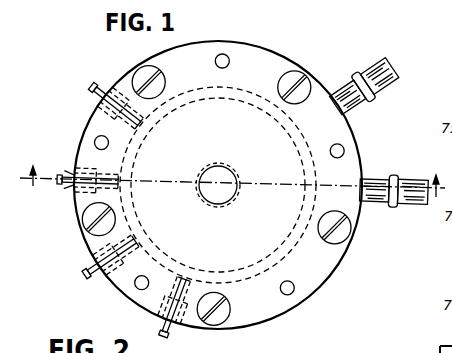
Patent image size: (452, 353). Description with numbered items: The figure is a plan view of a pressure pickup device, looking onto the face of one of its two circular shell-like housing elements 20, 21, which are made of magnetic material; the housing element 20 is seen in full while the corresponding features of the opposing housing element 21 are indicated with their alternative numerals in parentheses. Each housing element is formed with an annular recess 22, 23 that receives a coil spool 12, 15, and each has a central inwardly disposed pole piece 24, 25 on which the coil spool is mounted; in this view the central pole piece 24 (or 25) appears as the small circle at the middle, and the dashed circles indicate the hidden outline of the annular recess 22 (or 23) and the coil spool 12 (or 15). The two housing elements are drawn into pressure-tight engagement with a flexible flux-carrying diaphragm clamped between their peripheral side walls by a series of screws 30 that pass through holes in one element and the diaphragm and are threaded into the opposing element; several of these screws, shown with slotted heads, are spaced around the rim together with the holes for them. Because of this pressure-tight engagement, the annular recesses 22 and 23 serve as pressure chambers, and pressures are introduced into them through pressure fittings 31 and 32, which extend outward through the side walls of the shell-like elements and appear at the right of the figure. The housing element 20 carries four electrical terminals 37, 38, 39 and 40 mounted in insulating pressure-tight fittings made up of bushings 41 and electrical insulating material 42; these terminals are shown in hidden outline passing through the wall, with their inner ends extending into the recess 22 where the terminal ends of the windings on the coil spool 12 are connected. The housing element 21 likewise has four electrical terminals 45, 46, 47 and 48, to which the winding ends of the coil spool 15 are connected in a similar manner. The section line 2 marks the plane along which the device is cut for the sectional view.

The section line 2- 2 is at (232, 195).
The coil spool 12 is at (230, 185).
The coil spool 15 is at (320, 289).
The shell-like housing element 20 is at (268, 185).
The shell-like housing element 21 is at (343, 257).
The annular recess 22 is at (273, 185).
The annular recess 23 is at (320, 170).
The pole piece 24 is at (234, 174).
The pole piece 25 is at (216, 164).
The screw 30 is at (215, 62).
The pressure fitting 31 is at (372, 204).
The pressure fitting 32 is at (375, 67).
The electrical terminal 37 is at (93, 104).
The electrical terminal 38 is at (70, 160).
The electrical terminal 39 is at (88, 273).
The electrical terminal 40 is at (188, 313).
The bushing 41 is at (98, 250).
The electrical insulating material 42 is at (92, 268).
The electrical terminal 45 is at (90, 88).
The electrical terminal 46 is at (60, 178).
The electrical terminal 47 is at (88, 273).
The electrical terminal 48 is at (166, 335).